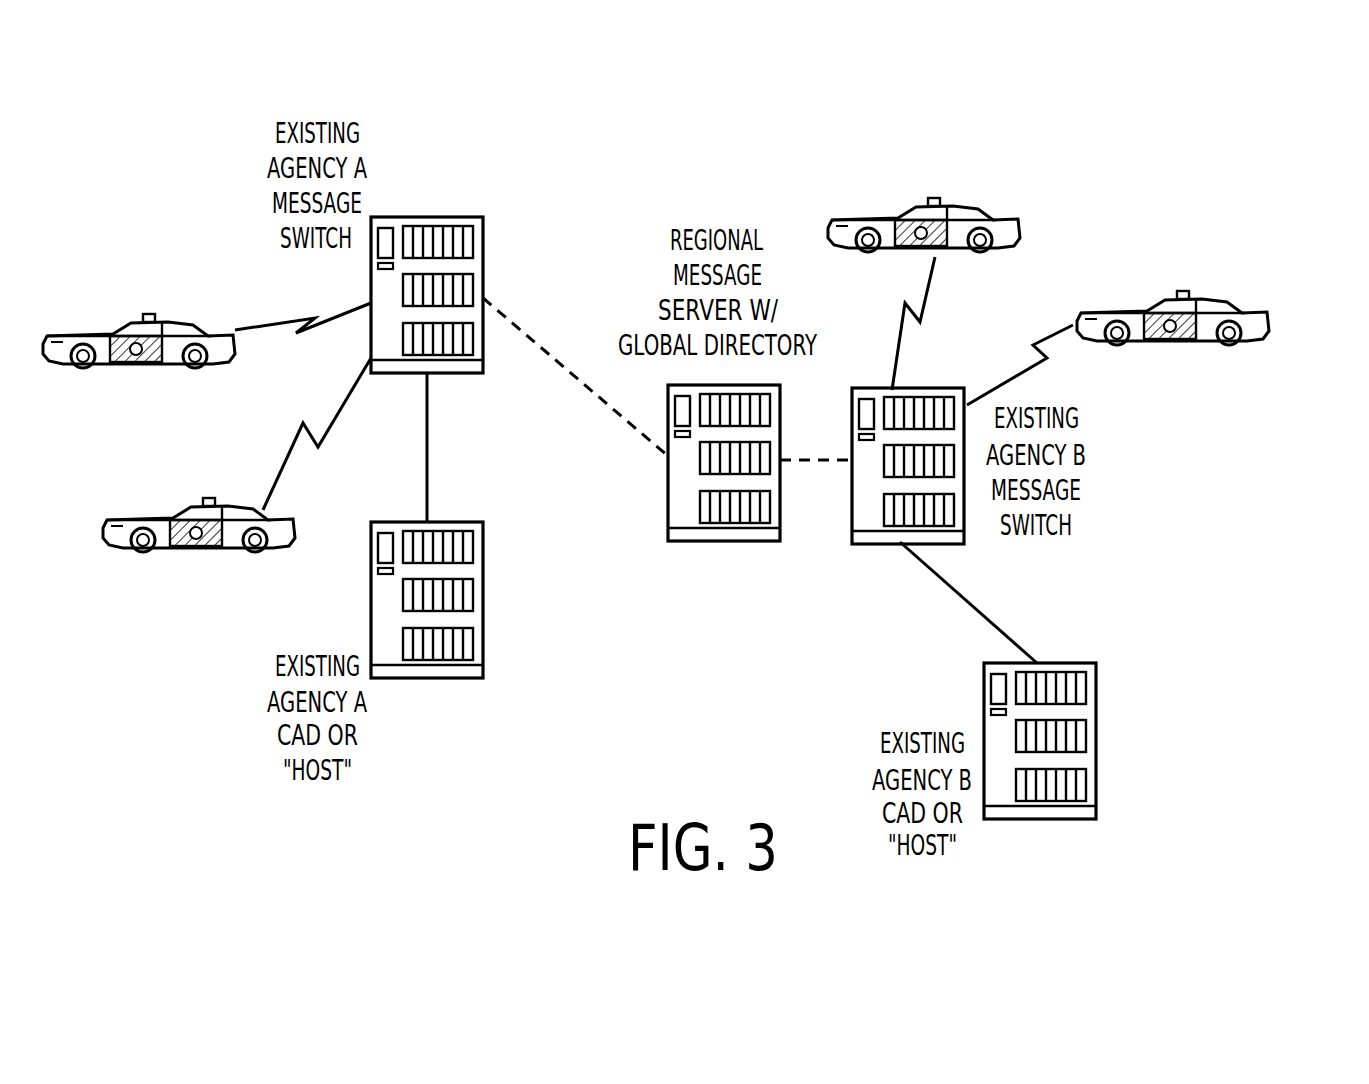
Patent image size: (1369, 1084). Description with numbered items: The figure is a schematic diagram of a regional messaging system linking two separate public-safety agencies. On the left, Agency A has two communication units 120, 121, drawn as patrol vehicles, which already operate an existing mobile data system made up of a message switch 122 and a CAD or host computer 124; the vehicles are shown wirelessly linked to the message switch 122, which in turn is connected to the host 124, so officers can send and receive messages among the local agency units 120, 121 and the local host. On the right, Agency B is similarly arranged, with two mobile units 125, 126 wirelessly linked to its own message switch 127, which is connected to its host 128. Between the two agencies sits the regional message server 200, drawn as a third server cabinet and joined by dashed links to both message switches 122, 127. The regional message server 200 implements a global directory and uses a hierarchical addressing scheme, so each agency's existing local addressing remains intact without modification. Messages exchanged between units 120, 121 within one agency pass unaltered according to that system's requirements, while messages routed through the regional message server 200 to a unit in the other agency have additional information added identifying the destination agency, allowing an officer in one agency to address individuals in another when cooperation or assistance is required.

The communication unit 120 is at (113, 322).
The communication unit 121 is at (172, 510).
The message switch 122 is at (432, 217).
The Existing Agency A CAD or host computer 124 is at (485, 616).
The mobile unit 125 is at (898, 207).
The mobile unit 126 is at (1268, 345).
The message switch 127 is at (878, 544).
The host 128 is at (1098, 722).
The regional message server 200 is at (710, 541).